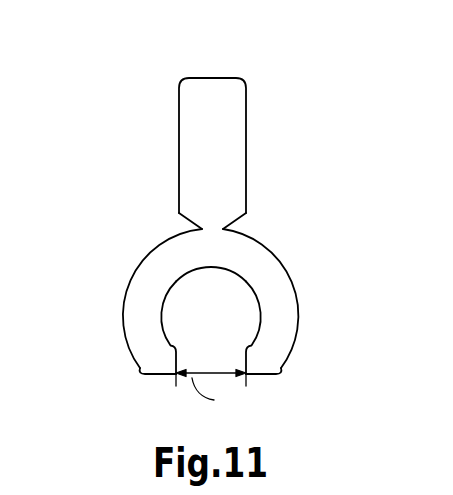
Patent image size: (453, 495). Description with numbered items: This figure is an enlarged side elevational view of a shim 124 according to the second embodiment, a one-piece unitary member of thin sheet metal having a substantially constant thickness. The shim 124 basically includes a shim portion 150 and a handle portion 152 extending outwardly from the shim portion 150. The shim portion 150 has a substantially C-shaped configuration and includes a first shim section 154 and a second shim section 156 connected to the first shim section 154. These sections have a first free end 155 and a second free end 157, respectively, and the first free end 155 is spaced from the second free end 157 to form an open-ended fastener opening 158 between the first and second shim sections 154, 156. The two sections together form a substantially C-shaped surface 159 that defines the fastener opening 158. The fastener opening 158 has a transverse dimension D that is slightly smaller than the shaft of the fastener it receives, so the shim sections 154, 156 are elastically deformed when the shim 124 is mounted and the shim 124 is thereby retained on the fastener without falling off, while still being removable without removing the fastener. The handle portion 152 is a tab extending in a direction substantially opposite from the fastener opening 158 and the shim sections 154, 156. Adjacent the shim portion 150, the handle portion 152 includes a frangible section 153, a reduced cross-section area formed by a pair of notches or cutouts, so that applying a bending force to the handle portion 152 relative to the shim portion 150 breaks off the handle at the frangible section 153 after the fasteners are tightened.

The shim 124 is at (275, 97).
The shim portion 150 is at (305, 276).
The handle portion 152 is at (257, 143).
The frangible section 153 is at (226, 227).
The first shim section 154 is at (140, 293).
The first free end 155 is at (150, 374).
The second shim section 156 is at (287, 315).
The second free end 157 is at (270, 374).
The open-ended fastener opening 158 is at (232, 339).
The C-shaped surface 159 is at (247, 281).